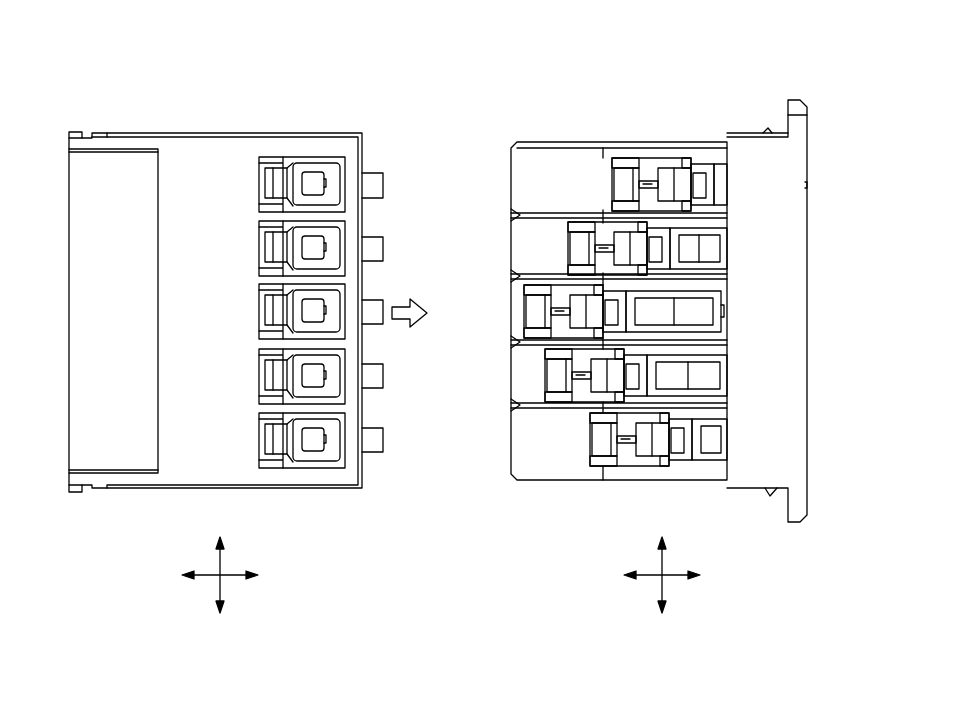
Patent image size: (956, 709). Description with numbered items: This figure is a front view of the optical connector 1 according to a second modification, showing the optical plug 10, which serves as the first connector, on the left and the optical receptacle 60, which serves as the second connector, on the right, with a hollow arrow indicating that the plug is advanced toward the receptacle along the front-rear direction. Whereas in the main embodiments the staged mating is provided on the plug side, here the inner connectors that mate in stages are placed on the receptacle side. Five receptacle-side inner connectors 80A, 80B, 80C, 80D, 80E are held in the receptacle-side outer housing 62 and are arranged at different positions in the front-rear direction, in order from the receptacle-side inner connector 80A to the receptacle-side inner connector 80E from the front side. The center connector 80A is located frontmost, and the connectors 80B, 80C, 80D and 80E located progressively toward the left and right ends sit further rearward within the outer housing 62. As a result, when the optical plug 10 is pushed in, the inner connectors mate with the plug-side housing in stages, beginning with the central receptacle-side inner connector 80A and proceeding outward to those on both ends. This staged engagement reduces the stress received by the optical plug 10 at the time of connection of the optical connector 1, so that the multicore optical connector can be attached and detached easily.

The optical connector 1 is at (662, 46).
The optical plug 10 is at (243, 132).
The optical receptacle 60 is at (645, 132).
The receptacle-side outer housing 62 is at (700, 140).
The receptacle-side inner connector 80A is at (511, 279).
The receptacle-side inner connector 80B is at (511, 345).
The receptacle-side inner connector 80C is at (511, 218).
The receptacle-side inner connector 80D is at (511, 408).
The receptacle-side inner connector 80E is at (511, 152).